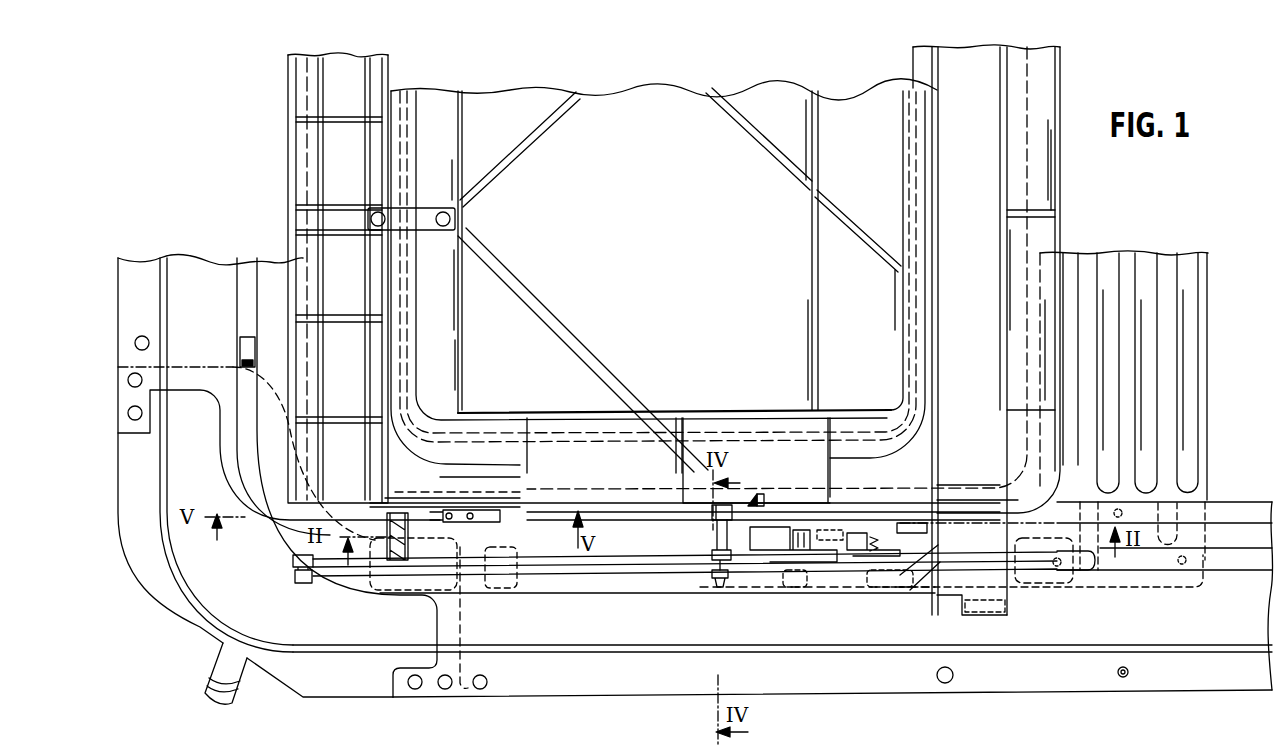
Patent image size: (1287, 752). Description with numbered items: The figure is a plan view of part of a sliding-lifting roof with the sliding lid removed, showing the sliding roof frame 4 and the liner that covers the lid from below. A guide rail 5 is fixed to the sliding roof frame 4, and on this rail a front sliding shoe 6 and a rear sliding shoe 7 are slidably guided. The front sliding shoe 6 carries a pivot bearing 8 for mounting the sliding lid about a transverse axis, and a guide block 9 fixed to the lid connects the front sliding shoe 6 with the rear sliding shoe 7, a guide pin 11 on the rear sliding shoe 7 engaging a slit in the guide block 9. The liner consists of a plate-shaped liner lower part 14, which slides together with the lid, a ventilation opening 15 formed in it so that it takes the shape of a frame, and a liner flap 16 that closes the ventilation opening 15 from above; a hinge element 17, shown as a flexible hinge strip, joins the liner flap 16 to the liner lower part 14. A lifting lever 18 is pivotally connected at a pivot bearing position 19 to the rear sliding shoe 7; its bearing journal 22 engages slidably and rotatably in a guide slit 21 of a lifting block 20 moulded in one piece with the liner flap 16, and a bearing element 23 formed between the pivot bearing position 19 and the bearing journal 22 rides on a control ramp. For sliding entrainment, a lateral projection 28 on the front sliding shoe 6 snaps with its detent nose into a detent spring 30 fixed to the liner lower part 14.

The sliding roof frame 4 is at (1195, 675).
The guide rail 5 is at (1240, 535).
The front sliding shoe 6 is at (488, 589).
The rear sliding shoe 7 is at (783, 590).
The pivot bearing 8 is at (282, 576).
The guide block 9 is at (648, 569).
The guide pin 11 is at (718, 587).
The liner lower part 14 is at (340, 67).
The ventilation opening 15 is at (503, 72).
The liner flap 16 is at (701, 104).
The hinge element 17 is at (422, 215).
The lifting lever 18 is at (750, 497).
The pivot bearing position 19 is at (717, 542).
The lifting block 20 is at (835, 476).
The guide slit 21 is at (621, 492).
The bearing journal 22 is at (764, 497).
The bearing element 23 is at (736, 505).
The lateral projection 28 is at (390, 567).
The detent spring 30 is at (457, 510).